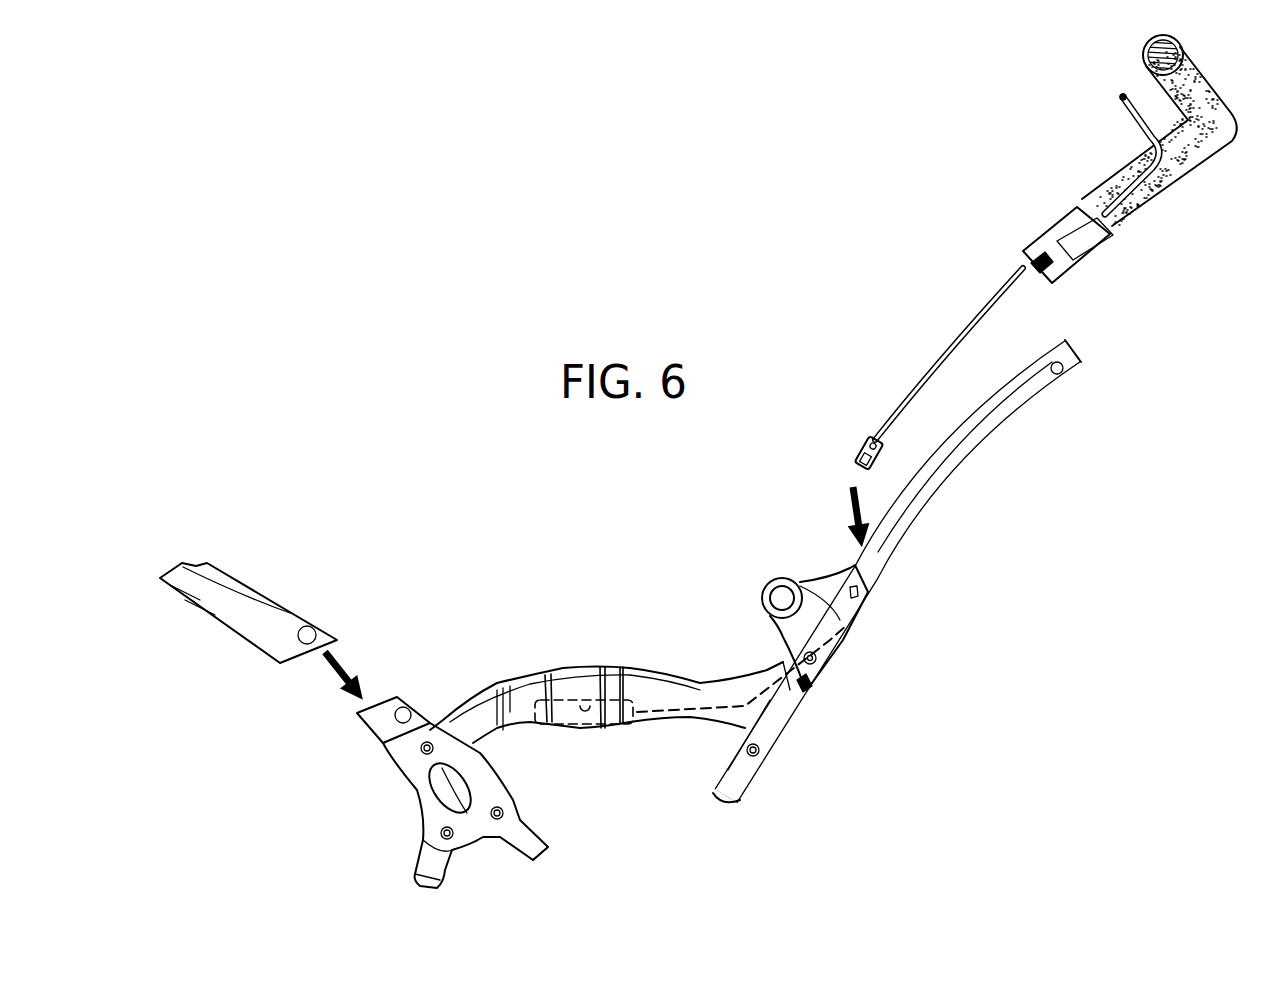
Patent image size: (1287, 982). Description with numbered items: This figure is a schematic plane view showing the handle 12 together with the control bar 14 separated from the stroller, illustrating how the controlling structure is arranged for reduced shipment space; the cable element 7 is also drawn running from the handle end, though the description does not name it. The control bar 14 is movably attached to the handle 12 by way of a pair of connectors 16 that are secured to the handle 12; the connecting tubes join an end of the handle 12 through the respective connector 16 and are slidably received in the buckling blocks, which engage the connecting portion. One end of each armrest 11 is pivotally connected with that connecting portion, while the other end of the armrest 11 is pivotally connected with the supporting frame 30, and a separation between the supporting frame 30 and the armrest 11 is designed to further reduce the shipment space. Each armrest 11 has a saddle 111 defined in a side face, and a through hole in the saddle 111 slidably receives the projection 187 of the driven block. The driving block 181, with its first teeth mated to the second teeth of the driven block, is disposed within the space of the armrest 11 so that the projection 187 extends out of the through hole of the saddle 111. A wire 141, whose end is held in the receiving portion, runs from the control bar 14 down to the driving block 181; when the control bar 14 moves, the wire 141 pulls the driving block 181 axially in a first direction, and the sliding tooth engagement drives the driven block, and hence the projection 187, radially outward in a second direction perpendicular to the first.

The control cable 7 is at (1184, 150).
The armrest 11 is at (639, 702).
The handle 12 is at (1229, 99).
The control bar 14 is at (1121, 98).
The connector 16 is at (1077, 207).
The supporting frame 30 is at (398, 768).
The saddle 111 is at (543, 668).
The wire 141 is at (812, 690).
The driving block 181 is at (633, 725).
The projection 187 is at (588, 703).